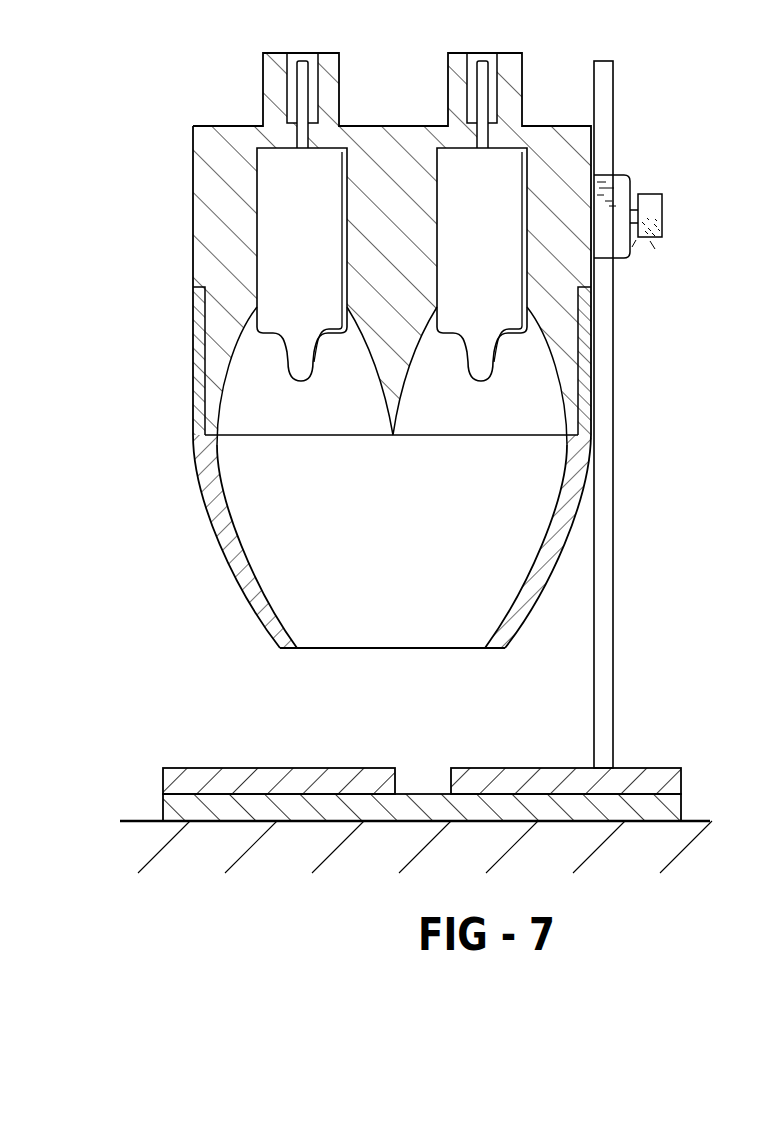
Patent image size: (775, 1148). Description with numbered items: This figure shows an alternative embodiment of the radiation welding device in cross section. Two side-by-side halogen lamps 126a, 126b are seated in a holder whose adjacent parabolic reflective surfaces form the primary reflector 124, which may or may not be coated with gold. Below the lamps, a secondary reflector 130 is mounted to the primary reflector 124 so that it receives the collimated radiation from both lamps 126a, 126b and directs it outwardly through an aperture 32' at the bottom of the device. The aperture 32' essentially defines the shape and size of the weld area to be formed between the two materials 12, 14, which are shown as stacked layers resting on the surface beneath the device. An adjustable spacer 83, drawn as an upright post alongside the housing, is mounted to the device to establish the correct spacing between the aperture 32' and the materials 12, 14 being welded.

The primary reflector 124 is at (556, 356).
The halogen lamp 126a is at (283, 300).
The halogen lamp 126b is at (500, 272).
The secondary reflector 130 is at (258, 598).
The aperture 32' is at (402, 684).
The adjustable spacer 83 is at (614, 571).
The material 14 is at (238, 768).
The material 12 is at (652, 768).